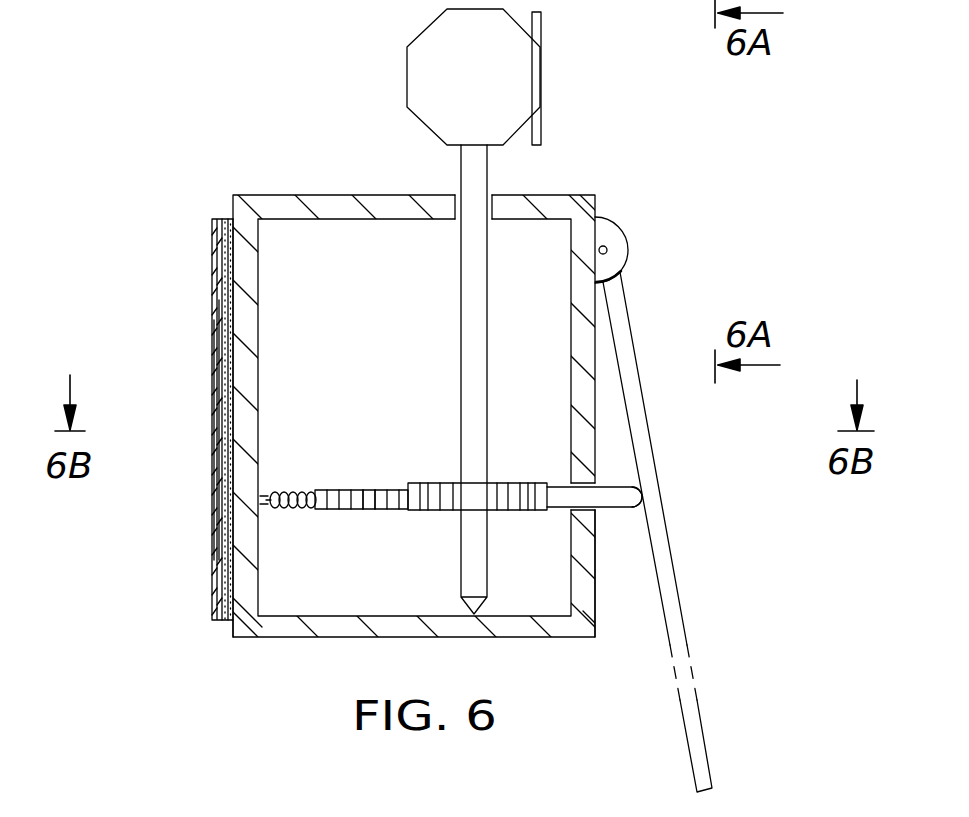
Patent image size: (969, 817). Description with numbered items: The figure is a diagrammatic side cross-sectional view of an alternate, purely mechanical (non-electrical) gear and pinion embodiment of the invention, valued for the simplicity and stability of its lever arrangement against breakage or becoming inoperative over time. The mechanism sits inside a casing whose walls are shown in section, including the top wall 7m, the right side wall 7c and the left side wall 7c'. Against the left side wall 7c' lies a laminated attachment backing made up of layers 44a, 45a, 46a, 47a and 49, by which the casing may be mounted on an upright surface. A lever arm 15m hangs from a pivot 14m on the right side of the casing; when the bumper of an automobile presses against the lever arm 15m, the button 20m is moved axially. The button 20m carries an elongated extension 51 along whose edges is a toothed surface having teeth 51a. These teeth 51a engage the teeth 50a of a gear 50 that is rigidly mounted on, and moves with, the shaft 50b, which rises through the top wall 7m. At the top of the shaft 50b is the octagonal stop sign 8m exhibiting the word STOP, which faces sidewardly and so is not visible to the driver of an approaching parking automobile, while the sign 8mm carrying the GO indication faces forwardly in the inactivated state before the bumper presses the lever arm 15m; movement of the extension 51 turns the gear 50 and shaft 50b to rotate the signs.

The housing top wall 7m is at (517, 167).
The housing right wall 7c is at (620, 573).
The housing left wall 7c' is at (199, 446).
The stop sign 8m is at (478, 93).
The sign 8mm is at (543, 127).
The pivot hinge 14m is at (613, 270).
The lever arm 15m is at (623, 353).
The button 20m is at (631, 492).
The outer panel layer 44a is at (236, 257).
The inner panel layer 45a is at (234, 356).
The intermediate panel layer 46a is at (221, 385).
The panel layer 47a is at (212, 457).
The panel layer 49 is at (258, 316).
The gear 50 is at (440, 490).
The teeth of gear 50a is at (518, 470).
The shaft 50b is at (467, 321).
The elongated extension 51 is at (378, 463).
The teeth 51a is at (376, 506).